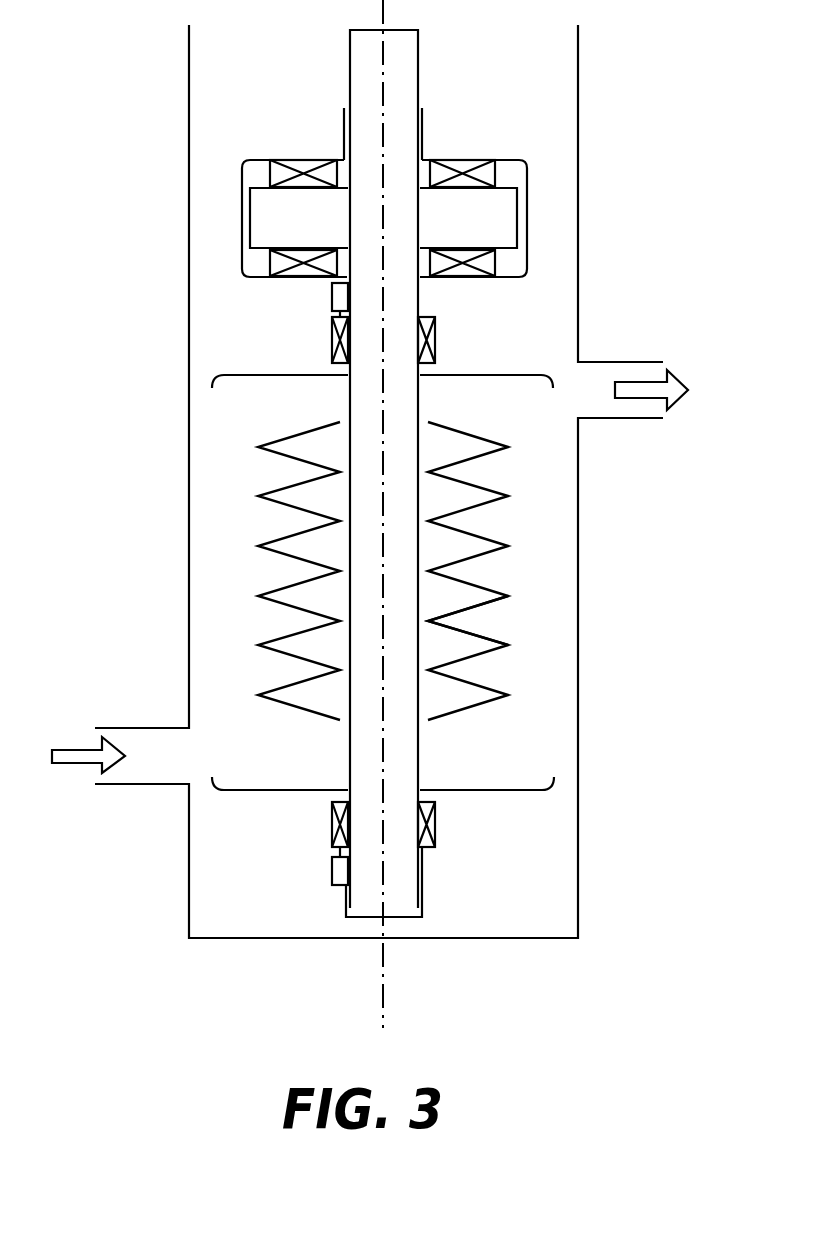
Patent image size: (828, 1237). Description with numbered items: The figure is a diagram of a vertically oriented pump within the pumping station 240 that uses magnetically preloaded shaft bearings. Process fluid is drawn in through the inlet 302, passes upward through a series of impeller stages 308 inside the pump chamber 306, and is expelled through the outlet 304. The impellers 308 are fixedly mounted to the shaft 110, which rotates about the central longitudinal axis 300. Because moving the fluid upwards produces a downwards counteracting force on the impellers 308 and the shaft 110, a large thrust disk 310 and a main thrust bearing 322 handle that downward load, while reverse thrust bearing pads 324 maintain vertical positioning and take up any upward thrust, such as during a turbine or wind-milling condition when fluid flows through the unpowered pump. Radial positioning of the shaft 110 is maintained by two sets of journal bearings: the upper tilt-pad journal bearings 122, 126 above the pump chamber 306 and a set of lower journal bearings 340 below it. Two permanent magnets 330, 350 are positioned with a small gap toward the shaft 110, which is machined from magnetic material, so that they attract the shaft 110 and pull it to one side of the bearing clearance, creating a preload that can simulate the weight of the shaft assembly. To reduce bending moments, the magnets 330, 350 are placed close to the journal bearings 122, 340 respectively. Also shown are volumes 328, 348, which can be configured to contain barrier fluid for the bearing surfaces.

The shaft 110 is at (404, 759).
The upper tilt-pad journal bearing 122 is at (330, 335).
The upper tilt-pad journal bearing 126 is at (436, 337).
The pumping station 240 is at (200, 1000).
The central longitudinal axis 300 is at (383, 992).
The inlet 302 is at (138, 772).
The outlet 304 is at (612, 408).
The pump chamber 306 is at (255, 584).
The impeller stages 308 is at (495, 600).
The thrust disk 310 is at (319, 233).
The main thrust bearing 322 is at (297, 268).
The reverse thrust bearing pads 324 is at (305, 165).
The volume 328 is at (507, 175).
The permanent magnet 330 is at (331, 294).
The lower journal bearings 340 is at (330, 818).
The volume 348 is at (421, 892).
The permanent magnet 350 is at (345, 872).